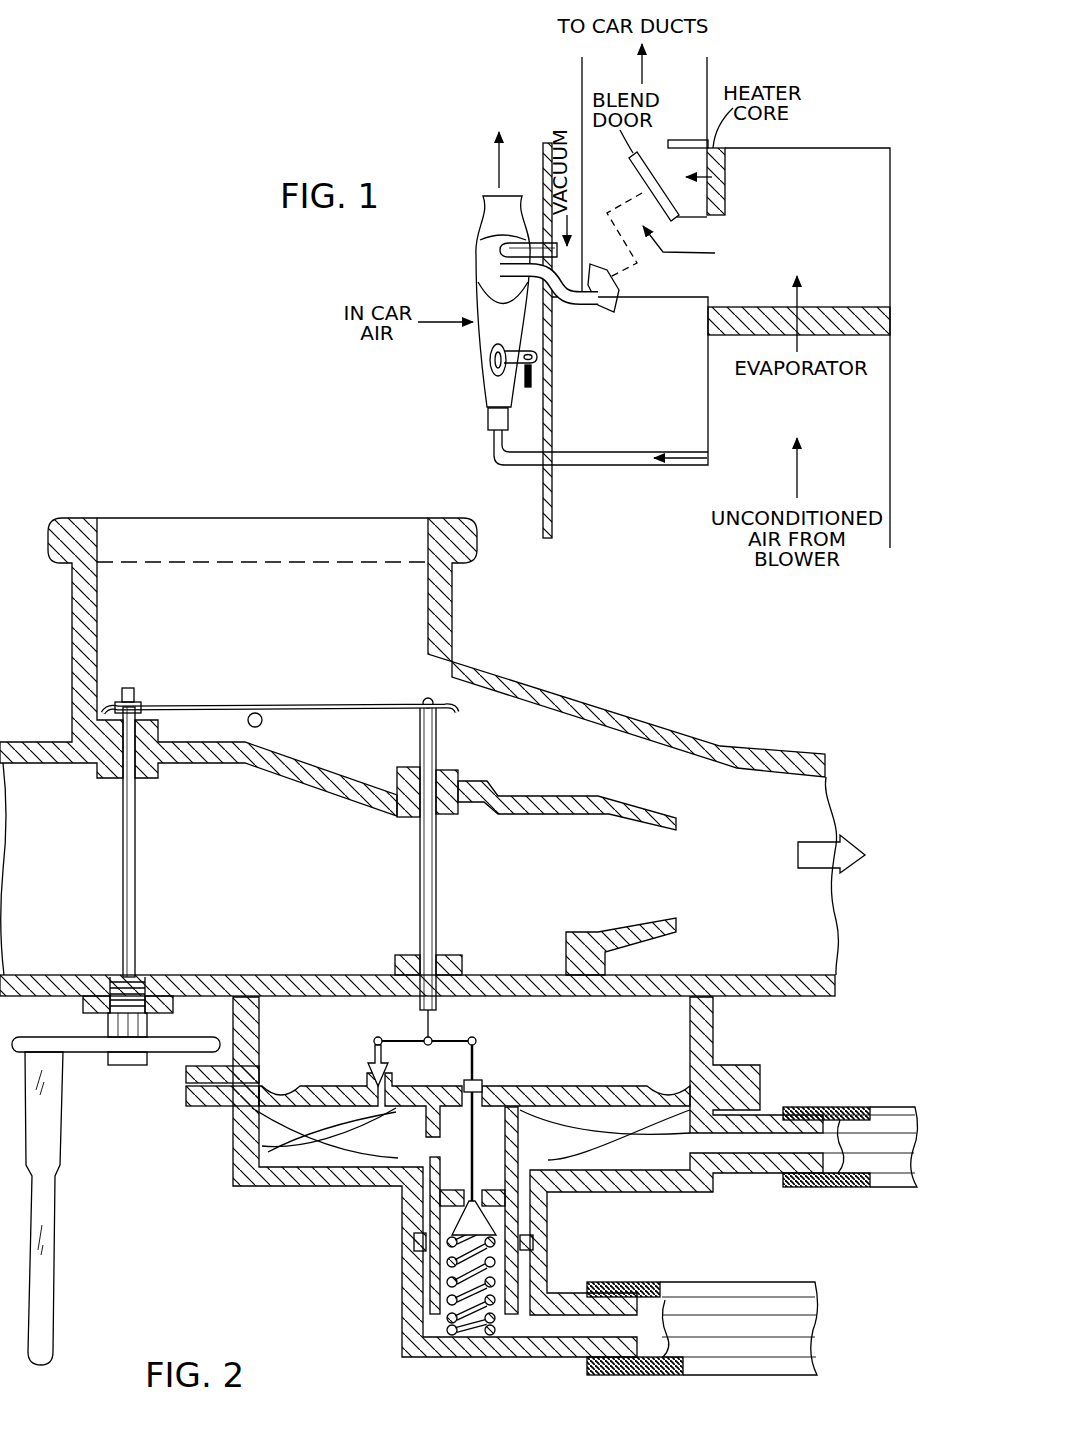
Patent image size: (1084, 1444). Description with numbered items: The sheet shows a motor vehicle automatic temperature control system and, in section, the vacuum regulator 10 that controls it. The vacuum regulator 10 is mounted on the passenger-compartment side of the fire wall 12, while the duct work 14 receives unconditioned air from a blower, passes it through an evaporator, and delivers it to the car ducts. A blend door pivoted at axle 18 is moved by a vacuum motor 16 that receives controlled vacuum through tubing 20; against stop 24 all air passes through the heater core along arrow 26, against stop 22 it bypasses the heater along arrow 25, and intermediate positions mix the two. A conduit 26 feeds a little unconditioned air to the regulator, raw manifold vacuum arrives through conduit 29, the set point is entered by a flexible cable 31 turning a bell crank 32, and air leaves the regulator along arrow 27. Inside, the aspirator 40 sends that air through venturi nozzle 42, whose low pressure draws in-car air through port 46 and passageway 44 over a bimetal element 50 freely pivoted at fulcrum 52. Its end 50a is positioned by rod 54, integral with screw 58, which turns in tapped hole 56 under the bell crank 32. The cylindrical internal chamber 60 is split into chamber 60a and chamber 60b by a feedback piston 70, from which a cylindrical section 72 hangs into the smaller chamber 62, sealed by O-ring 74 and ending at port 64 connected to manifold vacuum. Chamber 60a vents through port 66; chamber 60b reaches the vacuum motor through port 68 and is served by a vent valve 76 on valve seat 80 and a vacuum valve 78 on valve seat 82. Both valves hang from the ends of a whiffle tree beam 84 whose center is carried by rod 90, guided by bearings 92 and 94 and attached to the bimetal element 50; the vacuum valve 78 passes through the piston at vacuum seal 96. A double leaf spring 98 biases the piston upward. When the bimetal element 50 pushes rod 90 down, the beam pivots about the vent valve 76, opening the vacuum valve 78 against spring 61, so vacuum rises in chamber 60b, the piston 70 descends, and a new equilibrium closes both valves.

In FIG. 1, the vacuum regulator 10 is at (480, 282).
In FIG. 1, the fire wall 12 is at (553, 483).
In FIG. 1, the duct work 14 is at (890, 218).
In FIG. 1, the vacuum motor 16 is at (620, 308).
In FIG. 1, the axle 18 is at (677, 218).
In FIG. 1, the tubing 20 is at (582, 310).
In FIG. 2, the tubing 20 is at (840, 1187).
In FIG. 1, the stop 22 is at (678, 140).
In FIG. 1, the stop 24 is at (583, 218).
In FIG. 1, the arrow 25 is at (685, 255).
In FIG. 1, the arrow / conduit 26 is at (768, 186).
In FIG. 1, the arrow 27 is at (495, 160).
In FIG. 2, the arrow 27 is at (854, 854).
In FIG. 1, the conduit 29 is at (536, 243).
In FIG. 2, the conduit 29 is at (733, 1375).
In FIG. 1, the flexible cable 31 is at (528, 387).
In FIG. 1, the bell crank 32 is at (490, 357).
In FIG. 2, the bell crank 32 is at (43, 1263).
In FIG. 2, the aspirator 40 is at (300, 873).
In FIG. 2, the venturi nozzle 42 is at (655, 823).
In FIG. 2, the passageway 44 is at (294, 622).
In FIG. 2, the port 46 is at (285, 518).
In FIG. 2, the bimetal element 50 is at (360, 714).
In FIG. 2, the end of bimetal element 50a is at (137, 703).
In FIG. 2, the fulcrum 52 is at (263, 718).
In FIG. 2, the rod 54 is at (123, 848).
In FIG. 2, the tapped hole 56 is at (148, 1017).
In FIG. 2, the screw 58 is at (143, 982).
In FIG. 2, the internal chamber 60 is at (266, 1108).
In FIG. 2, the upper chamber 60a is at (337, 1028).
In FIG. 2, the lower chamber 60b is at (411, 1142).
In FIG. 2, the spring 61 is at (443, 1300).
In FIG. 2, the smaller cylindrical chamber 62 is at (414, 1355).
In FIG. 2, the port 64 is at (617, 1330).
In FIG. 2, the port 66 is at (713, 1023).
In FIG. 2, the port 68 is at (765, 1173).
In FIG. 2, the feedback piston 70 is at (587, 1087).
In FIG. 2, the cylindrical section 72 is at (520, 1203).
In FIG. 2, the O-ring 74 is at (533, 1245).
In FIG. 2, the vent valve 76 is at (370, 1068).
In FIG. 2, the vacuum valve 78 is at (453, 1225).
In FIG. 2, the valve seat 80 is at (393, 1078).
In FIG. 2, the valve seat 82 is at (452, 1212).
In FIG. 2, the whiffle tree beam 84 is at (433, 1041).
In FIG. 2, the rod 90 is at (434, 855).
In FIG. 2, the bearing 92 is at (439, 768).
In FIG. 2, the bearing 94 is at (440, 957).
In FIG. 2, the vacuum seal 96 is at (478, 1082).
In FIG. 2, the double leaf spring 98 is at (471, 1138).